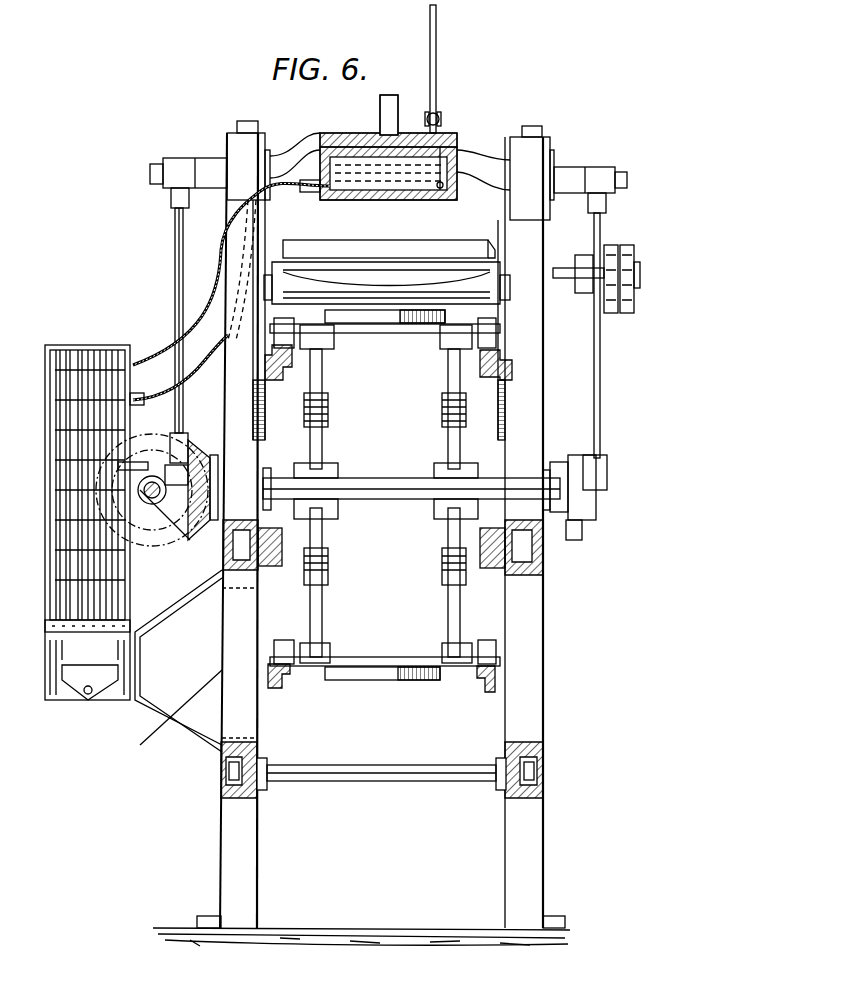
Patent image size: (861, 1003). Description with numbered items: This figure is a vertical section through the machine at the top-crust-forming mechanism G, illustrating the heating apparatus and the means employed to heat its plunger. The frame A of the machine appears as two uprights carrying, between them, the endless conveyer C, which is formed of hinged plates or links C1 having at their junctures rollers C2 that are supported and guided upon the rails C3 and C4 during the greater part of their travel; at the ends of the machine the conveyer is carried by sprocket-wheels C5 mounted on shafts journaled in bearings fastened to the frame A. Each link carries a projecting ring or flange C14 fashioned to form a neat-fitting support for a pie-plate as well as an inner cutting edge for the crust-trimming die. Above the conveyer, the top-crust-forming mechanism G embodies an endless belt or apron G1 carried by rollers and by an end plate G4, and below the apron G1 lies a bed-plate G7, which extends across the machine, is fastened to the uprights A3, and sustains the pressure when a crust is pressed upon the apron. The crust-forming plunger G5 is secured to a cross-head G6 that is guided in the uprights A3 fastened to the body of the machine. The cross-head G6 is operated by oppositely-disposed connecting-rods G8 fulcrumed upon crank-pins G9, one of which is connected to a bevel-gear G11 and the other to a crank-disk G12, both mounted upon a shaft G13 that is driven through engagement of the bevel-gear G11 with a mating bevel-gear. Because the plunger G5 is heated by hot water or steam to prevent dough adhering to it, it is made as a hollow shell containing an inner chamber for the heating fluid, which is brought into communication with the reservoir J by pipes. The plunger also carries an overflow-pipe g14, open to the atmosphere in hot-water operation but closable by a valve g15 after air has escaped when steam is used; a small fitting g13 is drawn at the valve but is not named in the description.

The frame A is at (237, 650).
The uprights A3 is at (250, 300).
The endless conveyer C is at (385, 495).
The plates or links C1 is at (405, 323).
The rollers C2 is at (283, 355).
The rails C3 is at (275, 355).
The rails C4 is at (275, 680).
The sprocket-wheels C5 is at (322, 440).
The projecting ring or flange C14 is at (355, 322).
The upper-crust-forming mechanism G is at (378, 146).
The endless belt or apron G1 is at (455, 263).
The end plate G4 is at (640, 275).
The crust-forming plunger G5 is at (455, 165).
The cross-head G6 is at (468, 150).
The bed-plate G7 is at (600, 265).
The connecting-rods G8 is at (176, 226).
The crank-pins G9 is at (130, 465).
The bevel-gear G11 is at (192, 528).
The crank-disk G12 is at (580, 520).
The shaft G13 is at (400, 502).
The valve g13 is at (437, 118).
The overflow-pipe g14 is at (428, 20).
The valve g15 is at (445, 120).
The reservoir J is at (45, 545).